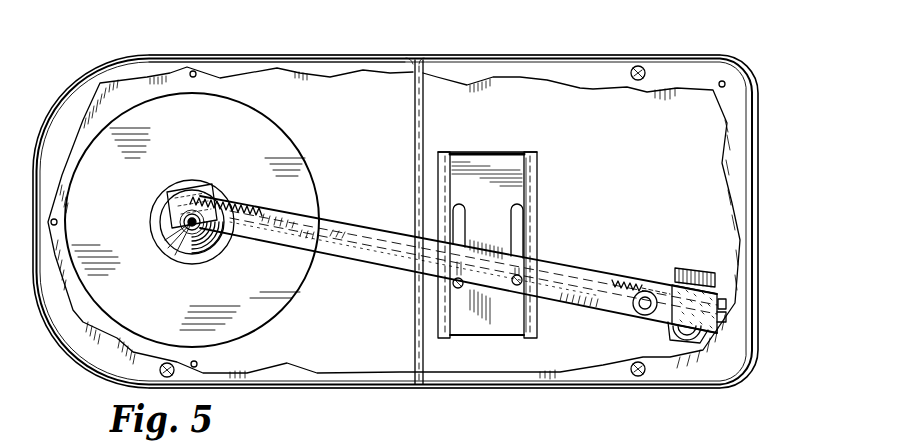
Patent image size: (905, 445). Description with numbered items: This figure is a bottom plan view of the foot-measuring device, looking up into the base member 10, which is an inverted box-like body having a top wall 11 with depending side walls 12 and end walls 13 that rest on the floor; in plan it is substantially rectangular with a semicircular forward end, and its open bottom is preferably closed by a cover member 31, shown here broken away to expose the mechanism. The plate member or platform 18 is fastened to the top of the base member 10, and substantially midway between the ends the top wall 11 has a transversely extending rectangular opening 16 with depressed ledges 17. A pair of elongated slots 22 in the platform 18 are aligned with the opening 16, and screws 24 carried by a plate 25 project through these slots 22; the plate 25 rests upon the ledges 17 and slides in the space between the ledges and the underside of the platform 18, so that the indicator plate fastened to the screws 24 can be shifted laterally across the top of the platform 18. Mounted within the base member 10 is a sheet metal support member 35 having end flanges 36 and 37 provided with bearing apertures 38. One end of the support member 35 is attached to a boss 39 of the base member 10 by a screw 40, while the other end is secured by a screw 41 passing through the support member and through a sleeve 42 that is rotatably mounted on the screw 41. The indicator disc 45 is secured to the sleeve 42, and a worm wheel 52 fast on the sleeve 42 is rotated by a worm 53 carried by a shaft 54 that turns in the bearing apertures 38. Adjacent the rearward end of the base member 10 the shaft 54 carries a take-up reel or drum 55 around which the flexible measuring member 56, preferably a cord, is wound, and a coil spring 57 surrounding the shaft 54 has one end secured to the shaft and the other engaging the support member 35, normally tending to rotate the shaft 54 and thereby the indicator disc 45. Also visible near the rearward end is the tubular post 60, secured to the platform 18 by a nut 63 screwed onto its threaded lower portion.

The base member 10 is at (533, 56).
The top wall 11 is at (380, 88).
The side walls 12 is at (319, 58).
The end walls 13 is at (46, 145).
The rectangular opening 16 is at (529, 171).
The depressed ledges 17 is at (445, 185).
The plate member or platform 18 is at (497, 162).
The elongated slots 22 is at (518, 212).
The screws 24 is at (513, 284).
The plate 25 is at (493, 327).
The cover member 31 is at (597, 75).
The support member 35 is at (377, 268).
The end flange 36 is at (160, 213).
The end flange 37 is at (722, 318).
The bearing apertures 38 is at (176, 200).
The boss 39 is at (650, 282).
The screw 40 is at (631, 308).
The screw 41 is at (178, 226).
The sleeve 42 is at (208, 251).
The indicator disc 45 is at (307, 160).
The worm wheel 52 is at (186, 236).
The worm 53 is at (212, 188).
The shaft 54 is at (313, 246).
The take-up reel or drum 55 is at (703, 277).
The flexible measuring member 56 is at (688, 268).
The coil spring 57 is at (613, 272).
The tubular post 60 is at (672, 330).
The nut 63 is at (668, 340).